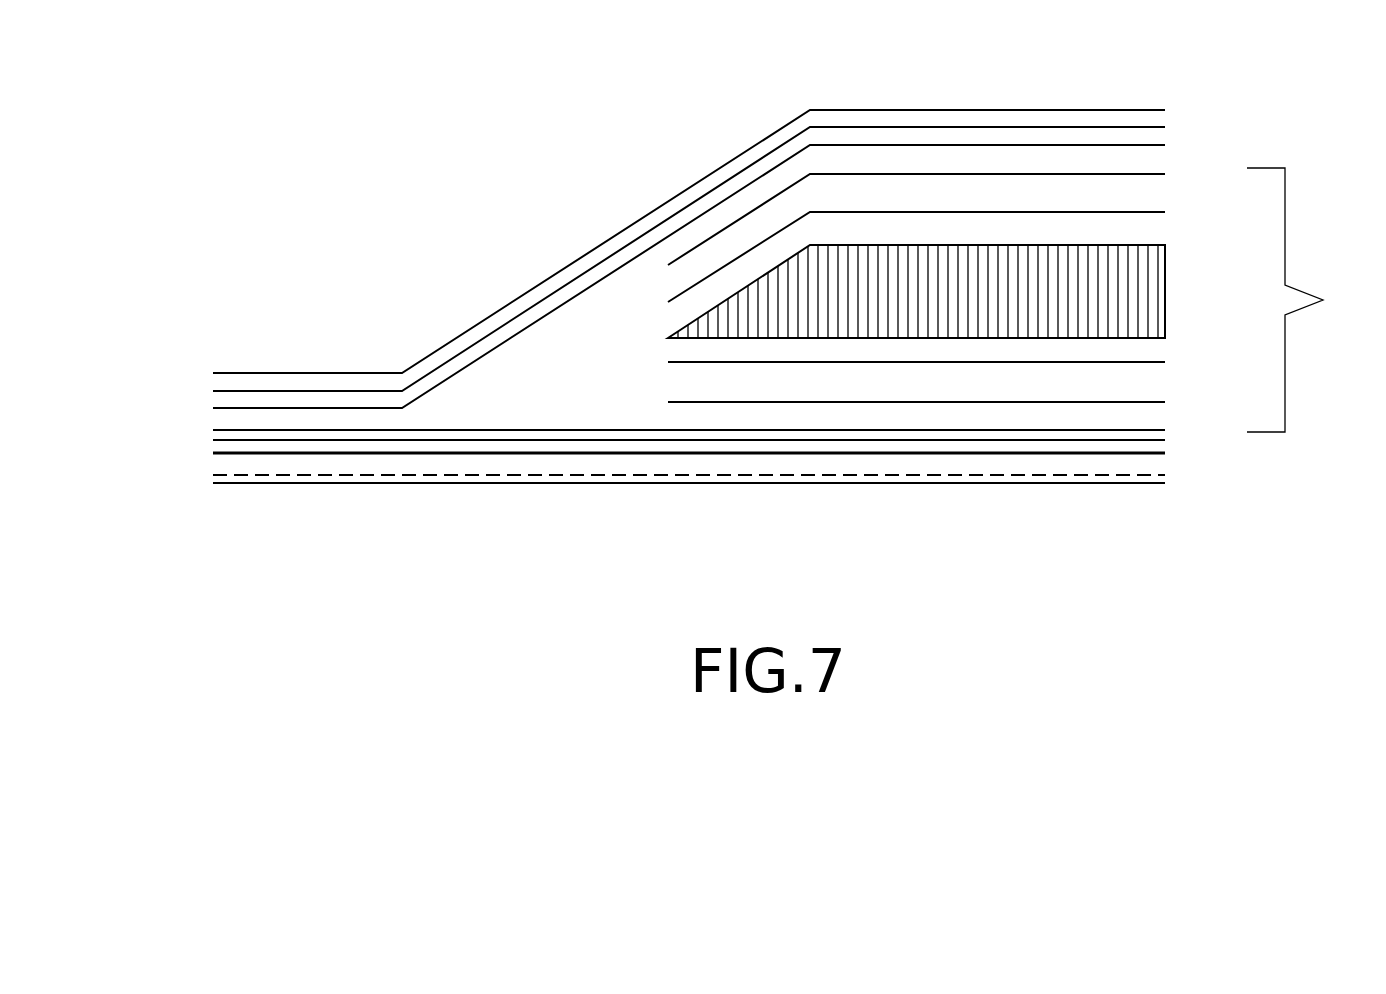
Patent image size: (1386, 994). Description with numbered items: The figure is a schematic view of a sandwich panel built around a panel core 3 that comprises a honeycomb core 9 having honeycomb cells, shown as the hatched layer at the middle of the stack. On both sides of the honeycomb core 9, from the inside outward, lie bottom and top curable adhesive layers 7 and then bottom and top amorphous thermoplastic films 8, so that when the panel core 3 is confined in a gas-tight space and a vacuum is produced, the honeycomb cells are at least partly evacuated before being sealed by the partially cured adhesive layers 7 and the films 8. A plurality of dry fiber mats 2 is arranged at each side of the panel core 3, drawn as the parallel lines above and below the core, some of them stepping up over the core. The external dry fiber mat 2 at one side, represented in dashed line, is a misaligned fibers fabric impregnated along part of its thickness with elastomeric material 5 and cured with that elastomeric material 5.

The dry fiber mat 2 is at (1165, 110).
The panel core 3 is at (1010, 298).
The elastomeric material 5 is at (213, 483).
The curable adhesive layer 7 is at (1165, 212).
The amorphous thermoplastic film 8 is at (1165, 174).
The honeycomb core 9 is at (1165, 295).